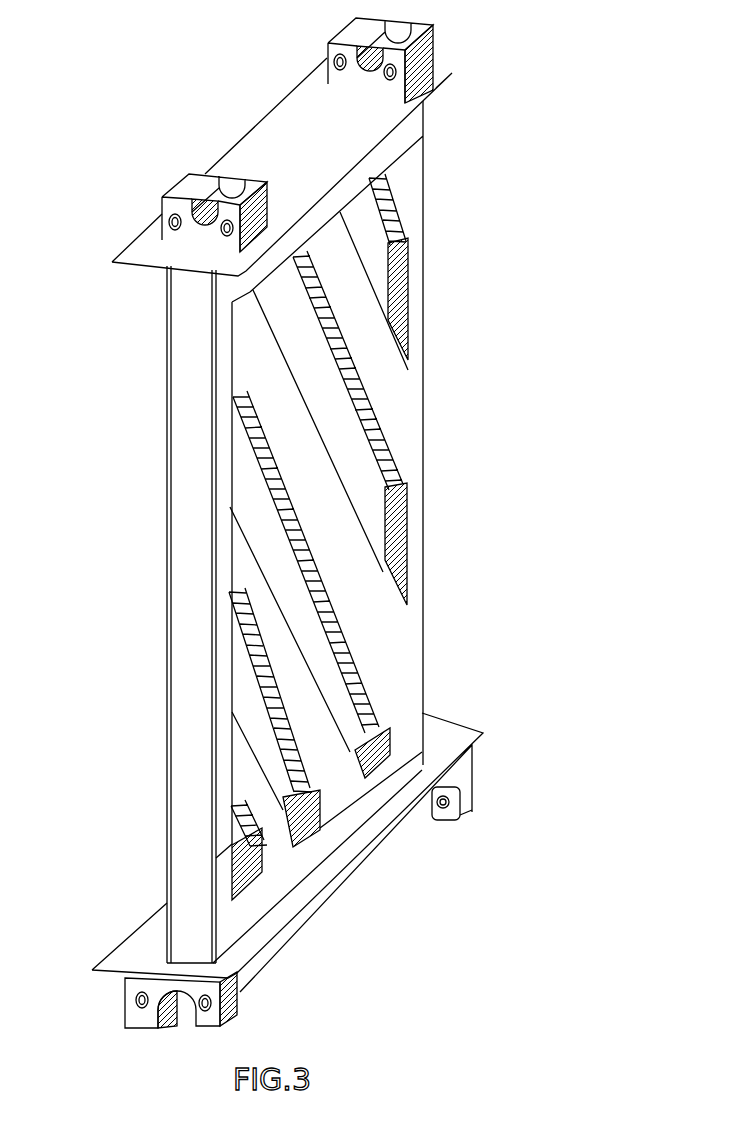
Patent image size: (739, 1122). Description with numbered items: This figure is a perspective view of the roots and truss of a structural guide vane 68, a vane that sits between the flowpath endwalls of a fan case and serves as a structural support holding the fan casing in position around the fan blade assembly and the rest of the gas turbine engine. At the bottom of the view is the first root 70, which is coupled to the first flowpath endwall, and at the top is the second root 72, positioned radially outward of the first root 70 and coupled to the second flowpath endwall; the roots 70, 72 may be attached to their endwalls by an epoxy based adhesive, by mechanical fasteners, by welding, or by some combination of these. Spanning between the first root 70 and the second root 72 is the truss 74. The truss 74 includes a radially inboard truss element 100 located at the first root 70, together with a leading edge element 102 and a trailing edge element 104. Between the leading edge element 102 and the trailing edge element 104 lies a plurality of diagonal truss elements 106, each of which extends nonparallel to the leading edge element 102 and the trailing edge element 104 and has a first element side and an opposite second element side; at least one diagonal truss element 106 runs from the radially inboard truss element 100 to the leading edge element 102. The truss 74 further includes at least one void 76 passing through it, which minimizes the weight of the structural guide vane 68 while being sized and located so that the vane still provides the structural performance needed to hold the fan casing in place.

The structural guide vane 68 is at (319, 523).
The first root 70 is at (482, 740).
The second root 72 is at (445, 72).
The truss 74 is at (131, 614).
The void 76 is at (388, 505).
The radially inboard truss element 100 is at (303, 853).
The leading edge element 102 is at (188, 490).
The trailing edge element 104 is at (413, 327).
The diagonal truss elements 106 is at (270, 393).